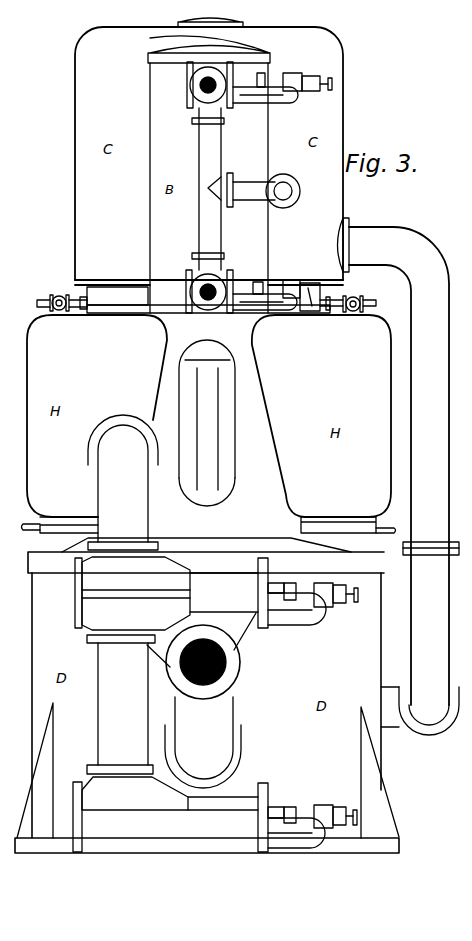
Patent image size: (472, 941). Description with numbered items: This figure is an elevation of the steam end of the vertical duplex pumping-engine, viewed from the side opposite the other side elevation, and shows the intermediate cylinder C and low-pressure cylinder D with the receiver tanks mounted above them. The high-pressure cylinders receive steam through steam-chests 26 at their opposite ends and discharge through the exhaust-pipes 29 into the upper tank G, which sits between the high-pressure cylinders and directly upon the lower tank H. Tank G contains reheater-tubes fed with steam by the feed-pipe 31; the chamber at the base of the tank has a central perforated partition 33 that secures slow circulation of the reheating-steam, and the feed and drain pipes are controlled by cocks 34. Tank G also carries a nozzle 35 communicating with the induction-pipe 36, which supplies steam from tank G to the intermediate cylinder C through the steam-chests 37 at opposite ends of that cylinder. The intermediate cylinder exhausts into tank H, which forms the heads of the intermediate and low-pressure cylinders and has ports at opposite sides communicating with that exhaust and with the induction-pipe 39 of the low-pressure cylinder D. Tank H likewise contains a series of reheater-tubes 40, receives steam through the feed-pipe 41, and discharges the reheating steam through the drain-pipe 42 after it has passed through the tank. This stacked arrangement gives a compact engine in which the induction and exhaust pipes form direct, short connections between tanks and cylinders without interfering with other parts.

The steam-chest 26 is at (186, 91).
The exhaust-pipe 29 is at (222, 172).
The feed-pipe 31 is at (376, 300).
The perforated partition 33 is at (42, 300).
The cock 34 is at (353, 297).
The nozzle 35 is at (346, 224).
The induction-pipe 36 is at (392, 687).
The steam-chest 37 is at (215, 704).
The induction-pipe 39 is at (122, 594).
The reheater-tube 40 is at (201, 700).
The feed-pipe 41 is at (33, 533).
The drain-pipe 42 is at (388, 528).